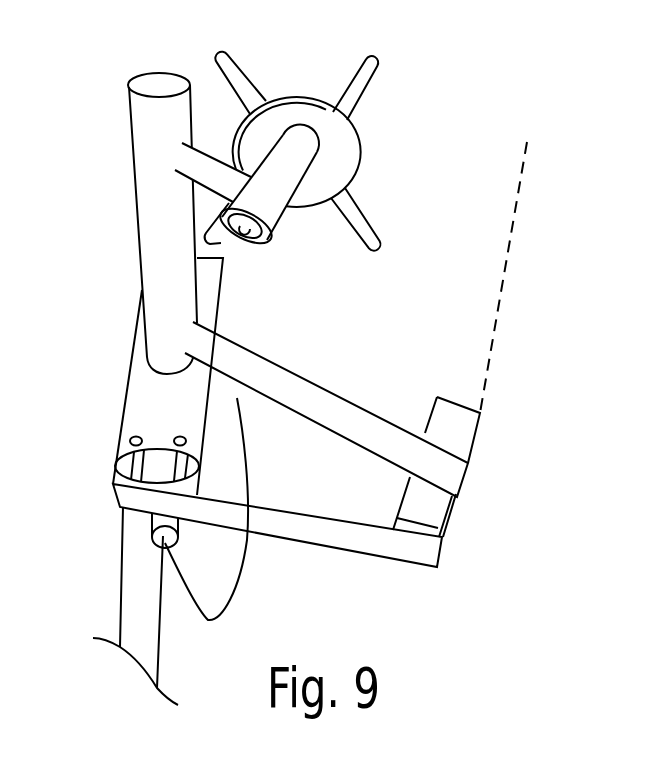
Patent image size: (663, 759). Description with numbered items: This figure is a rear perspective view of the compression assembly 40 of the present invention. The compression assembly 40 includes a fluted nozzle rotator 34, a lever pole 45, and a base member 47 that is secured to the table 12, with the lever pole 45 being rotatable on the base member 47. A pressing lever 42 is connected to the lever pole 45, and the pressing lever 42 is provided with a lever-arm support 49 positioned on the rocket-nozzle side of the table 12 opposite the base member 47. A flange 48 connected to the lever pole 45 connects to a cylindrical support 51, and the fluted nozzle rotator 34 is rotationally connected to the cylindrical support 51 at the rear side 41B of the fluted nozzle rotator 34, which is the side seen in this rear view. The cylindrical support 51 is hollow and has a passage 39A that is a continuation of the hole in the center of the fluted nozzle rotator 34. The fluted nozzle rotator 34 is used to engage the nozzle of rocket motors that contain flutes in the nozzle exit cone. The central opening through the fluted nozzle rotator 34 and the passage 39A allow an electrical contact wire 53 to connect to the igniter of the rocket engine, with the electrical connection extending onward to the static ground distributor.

The compression assembly 40 is at (147, 64).
The lever pole 45 is at (157, 223).
The flange 48 is at (208, 166).
The fluted nozzle rotator 34 is at (334, 151).
The rear side of the fluted nozzle rotator 41B is at (328, 168).
The cylindrical support 51 is at (275, 208).
The passage 39A is at (245, 229).
The base member 47 is at (133, 407).
The pressing lever 42 is at (325, 393).
The lever-arm support 49 is at (457, 428).
The table 12 is at (465, 270).
The electrical contact wire 53 is at (237, 580).